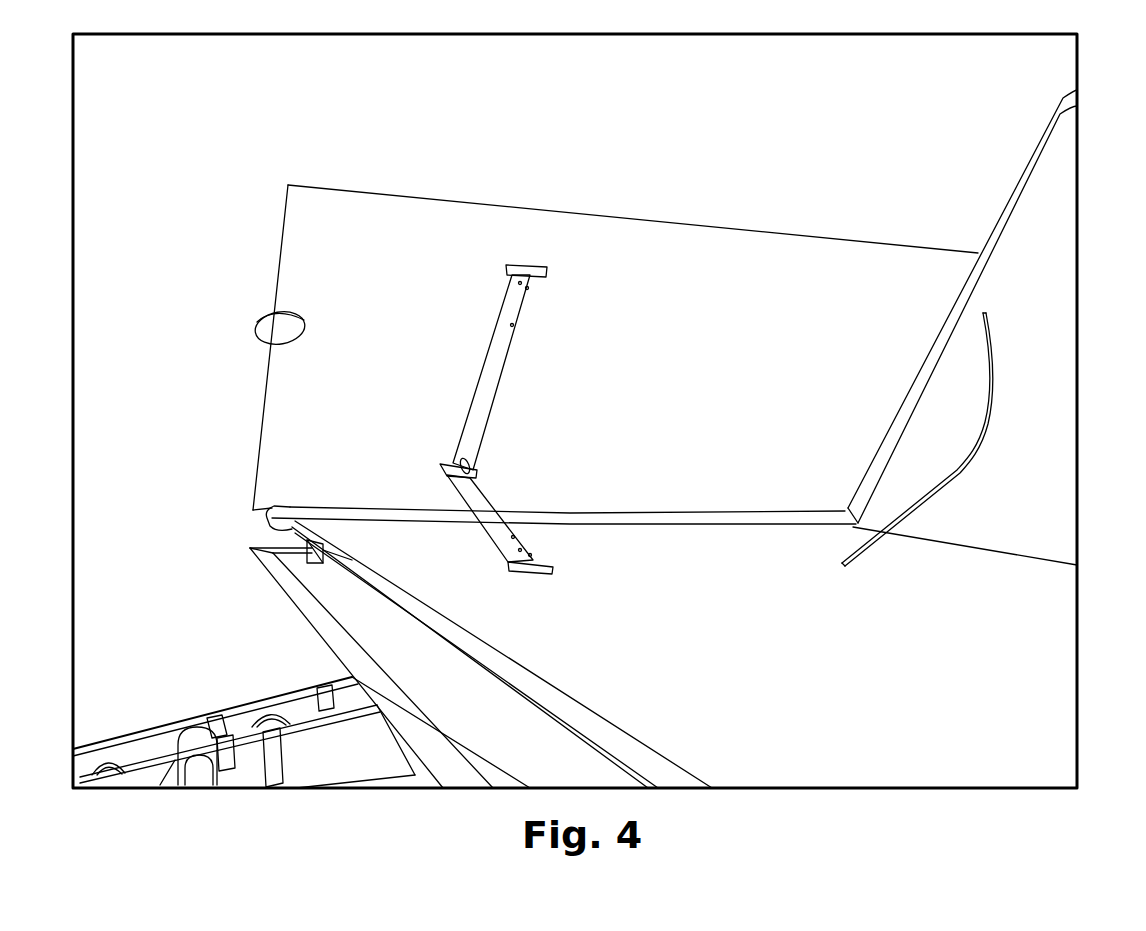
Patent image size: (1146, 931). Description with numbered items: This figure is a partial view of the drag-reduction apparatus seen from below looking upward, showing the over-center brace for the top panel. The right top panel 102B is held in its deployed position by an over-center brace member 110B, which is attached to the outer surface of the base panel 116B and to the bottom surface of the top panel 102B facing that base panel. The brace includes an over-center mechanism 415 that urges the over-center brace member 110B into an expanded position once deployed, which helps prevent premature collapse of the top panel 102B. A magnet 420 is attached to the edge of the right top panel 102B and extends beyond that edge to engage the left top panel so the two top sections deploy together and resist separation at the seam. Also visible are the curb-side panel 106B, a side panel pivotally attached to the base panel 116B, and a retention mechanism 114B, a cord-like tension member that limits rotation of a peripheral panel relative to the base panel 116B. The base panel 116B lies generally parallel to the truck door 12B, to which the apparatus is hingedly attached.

The right top panel 102B is at (577, 220).
The magnet 420 is at (252, 338).
The over-center brace member 110B is at (513, 355).
The over-center mechanism 415 is at (477, 472).
The door 12B is at (292, 602).
The curb-side panel 106B is at (1058, 336).
The retention mechanism 114B is at (960, 468).
The base panel 116B is at (729, 656).